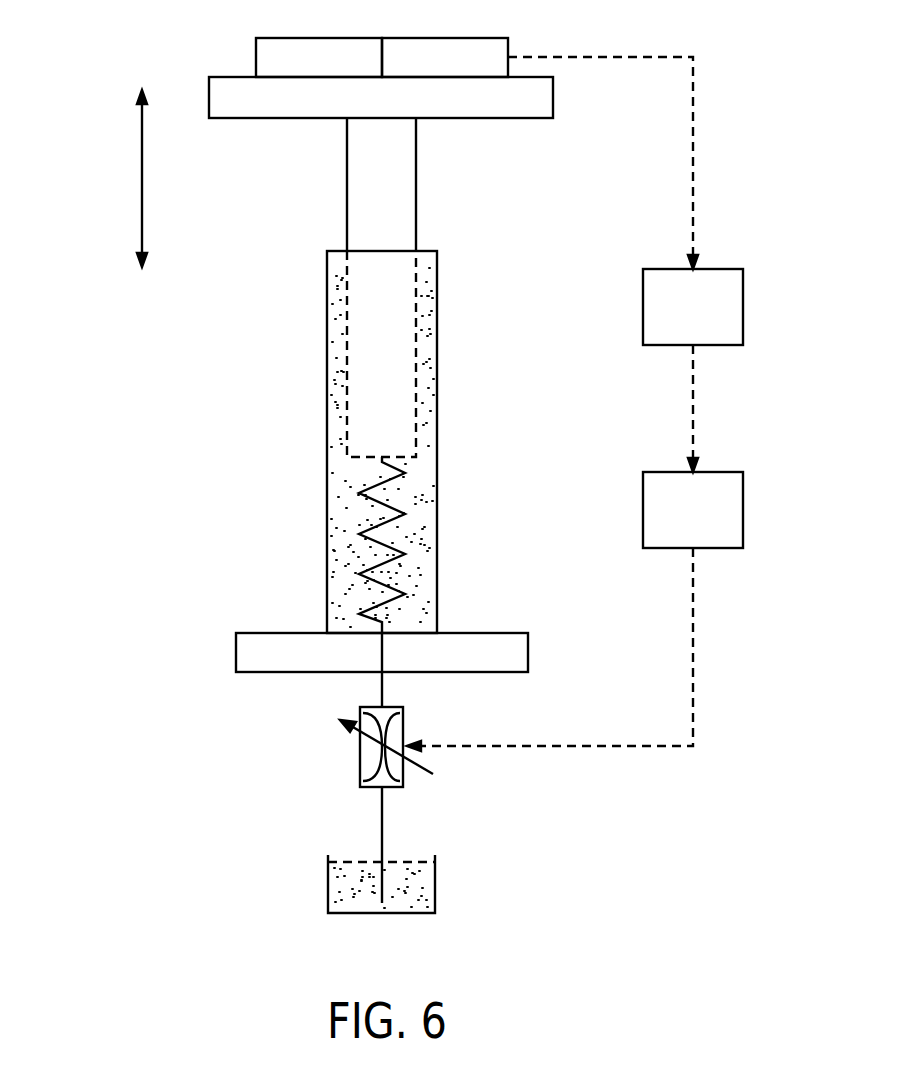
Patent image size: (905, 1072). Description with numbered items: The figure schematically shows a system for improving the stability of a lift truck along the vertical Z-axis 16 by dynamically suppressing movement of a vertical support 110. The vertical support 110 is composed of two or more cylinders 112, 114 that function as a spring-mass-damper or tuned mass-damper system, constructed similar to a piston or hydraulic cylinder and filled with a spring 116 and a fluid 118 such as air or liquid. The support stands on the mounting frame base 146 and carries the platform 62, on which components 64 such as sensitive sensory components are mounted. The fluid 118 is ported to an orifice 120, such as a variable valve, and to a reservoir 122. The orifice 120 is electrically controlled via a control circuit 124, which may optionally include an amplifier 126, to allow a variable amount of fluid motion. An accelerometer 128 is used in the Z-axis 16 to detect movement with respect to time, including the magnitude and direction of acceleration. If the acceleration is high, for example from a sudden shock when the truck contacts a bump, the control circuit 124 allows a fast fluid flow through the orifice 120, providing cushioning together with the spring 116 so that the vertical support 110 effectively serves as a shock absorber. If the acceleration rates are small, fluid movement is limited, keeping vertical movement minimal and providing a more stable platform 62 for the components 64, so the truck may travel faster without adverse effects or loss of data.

The Z-axis 16 is at (140, 180).
The platform 62 is at (209, 77).
The components 64 is at (318, 38).
The vertical support 110 is at (112, 377).
The cylinder 112 is at (327, 388).
The cylinder 114 is at (416, 197).
The spring 116 is at (385, 503).
The fluid 118 is at (343, 583).
The orifice 120 is at (360, 712).
The reservoir 122 is at (435, 883).
The control circuit 124 is at (772, 296).
The amplifier 126 is at (743, 510).
The accelerometer 128 is at (445, 38).
The mounting frame base 146 is at (236, 652).